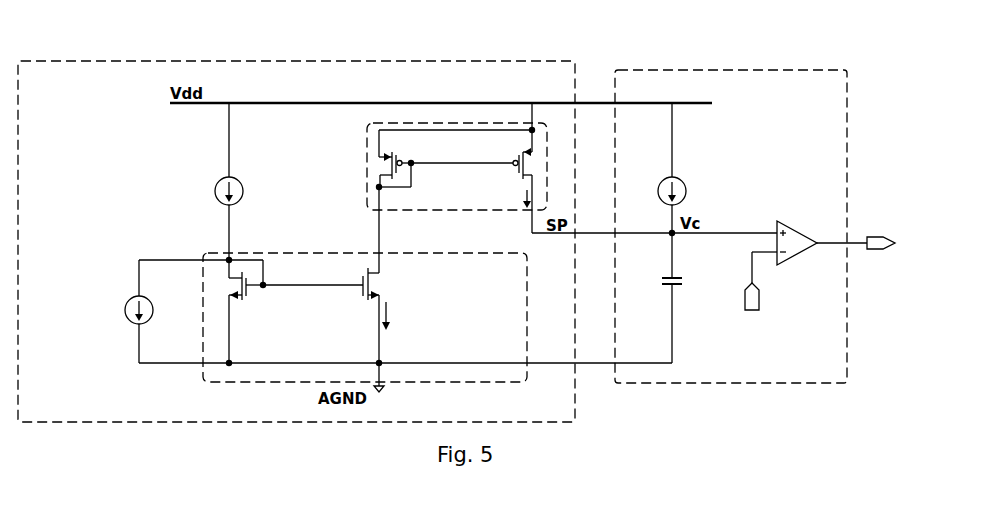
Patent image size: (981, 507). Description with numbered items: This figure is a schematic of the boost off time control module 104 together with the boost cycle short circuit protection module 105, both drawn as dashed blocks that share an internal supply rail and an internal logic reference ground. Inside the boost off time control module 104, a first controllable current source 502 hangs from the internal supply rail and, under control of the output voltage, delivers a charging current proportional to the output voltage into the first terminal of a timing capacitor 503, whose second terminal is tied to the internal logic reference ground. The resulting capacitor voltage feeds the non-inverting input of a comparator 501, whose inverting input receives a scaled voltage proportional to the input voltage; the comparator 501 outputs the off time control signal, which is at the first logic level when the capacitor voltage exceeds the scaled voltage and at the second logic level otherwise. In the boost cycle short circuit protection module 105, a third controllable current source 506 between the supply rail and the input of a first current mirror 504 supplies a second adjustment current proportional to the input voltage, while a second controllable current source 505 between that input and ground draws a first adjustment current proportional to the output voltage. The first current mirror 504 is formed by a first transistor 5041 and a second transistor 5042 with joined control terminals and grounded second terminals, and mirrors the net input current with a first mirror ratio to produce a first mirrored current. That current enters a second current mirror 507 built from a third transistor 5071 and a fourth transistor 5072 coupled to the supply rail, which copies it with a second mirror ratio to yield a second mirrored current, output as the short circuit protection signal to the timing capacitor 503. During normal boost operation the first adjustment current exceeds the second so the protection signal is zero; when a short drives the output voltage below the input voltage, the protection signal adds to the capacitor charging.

The boost cycle short circuit protection module 105 is at (275, 61).
The boost off time control module 104 is at (652, 70).
The third controllable current source 506 is at (244, 196).
The second controllable current source 505 is at (150, 322).
The first current mirror 504 is at (437, 384).
The first transistor 5041 is at (248, 298).
The second transistor 5042 is at (362, 298).
The second current mirror 507 is at (447, 215).
The third transistor 5071 is at (400, 157).
The fourth transistor 5072 is at (513, 157).
The first controllable current source 502 is at (660, 182).
The timing capacitor 503 is at (662, 278).
The comparator 501 is at (787, 229).